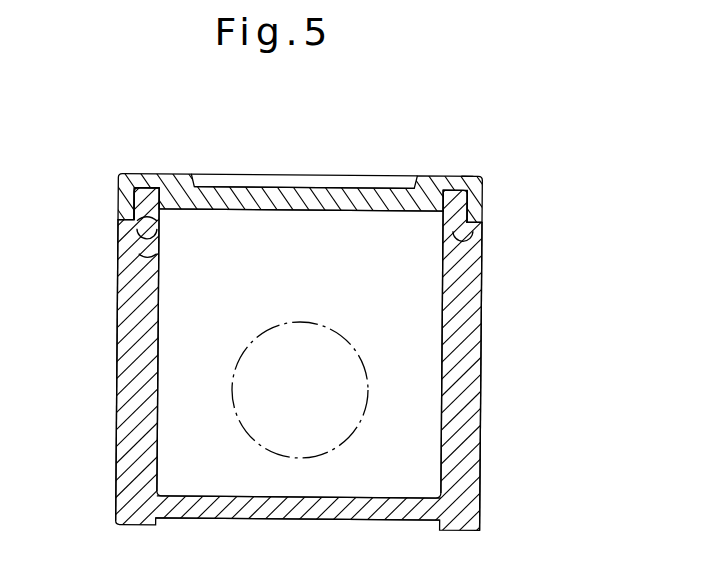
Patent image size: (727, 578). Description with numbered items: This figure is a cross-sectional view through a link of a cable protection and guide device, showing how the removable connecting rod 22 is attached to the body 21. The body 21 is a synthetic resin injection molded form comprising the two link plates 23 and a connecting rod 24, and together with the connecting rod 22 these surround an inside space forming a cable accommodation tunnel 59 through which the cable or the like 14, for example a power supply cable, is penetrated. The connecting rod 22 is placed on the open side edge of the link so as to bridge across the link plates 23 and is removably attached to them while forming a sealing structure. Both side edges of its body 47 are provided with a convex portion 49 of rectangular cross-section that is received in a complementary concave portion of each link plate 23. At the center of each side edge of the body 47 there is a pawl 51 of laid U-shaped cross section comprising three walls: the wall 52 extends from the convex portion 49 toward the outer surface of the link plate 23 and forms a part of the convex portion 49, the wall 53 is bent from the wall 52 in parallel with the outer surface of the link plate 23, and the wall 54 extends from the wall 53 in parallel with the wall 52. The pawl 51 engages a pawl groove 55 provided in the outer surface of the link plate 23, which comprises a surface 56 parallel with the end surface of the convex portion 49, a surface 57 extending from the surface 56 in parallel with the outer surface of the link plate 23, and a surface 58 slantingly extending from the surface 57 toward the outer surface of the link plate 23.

The cable or the like 14 is at (307, 322).
The body 21 is at (483, 408).
The connecting rod 22 is at (350, 176).
The link plate 23 is at (483, 335).
The connecting rod 24 is at (300, 508).
The body of the connecting rod 47 is at (287, 190).
The convex portion 49 is at (465, 177).
The pawl 51 is at (487, 190).
The wall 52 is at (147, 180).
The wall 53 is at (122, 197).
The wall 54 is at (132, 220).
The pawl groove 55 is at (472, 240).
The surface 56 is at (145, 223).
The surface 57 is at (150, 257).
The surface 58 is at (138, 237).
The tunnel 59 is at (400, 280).